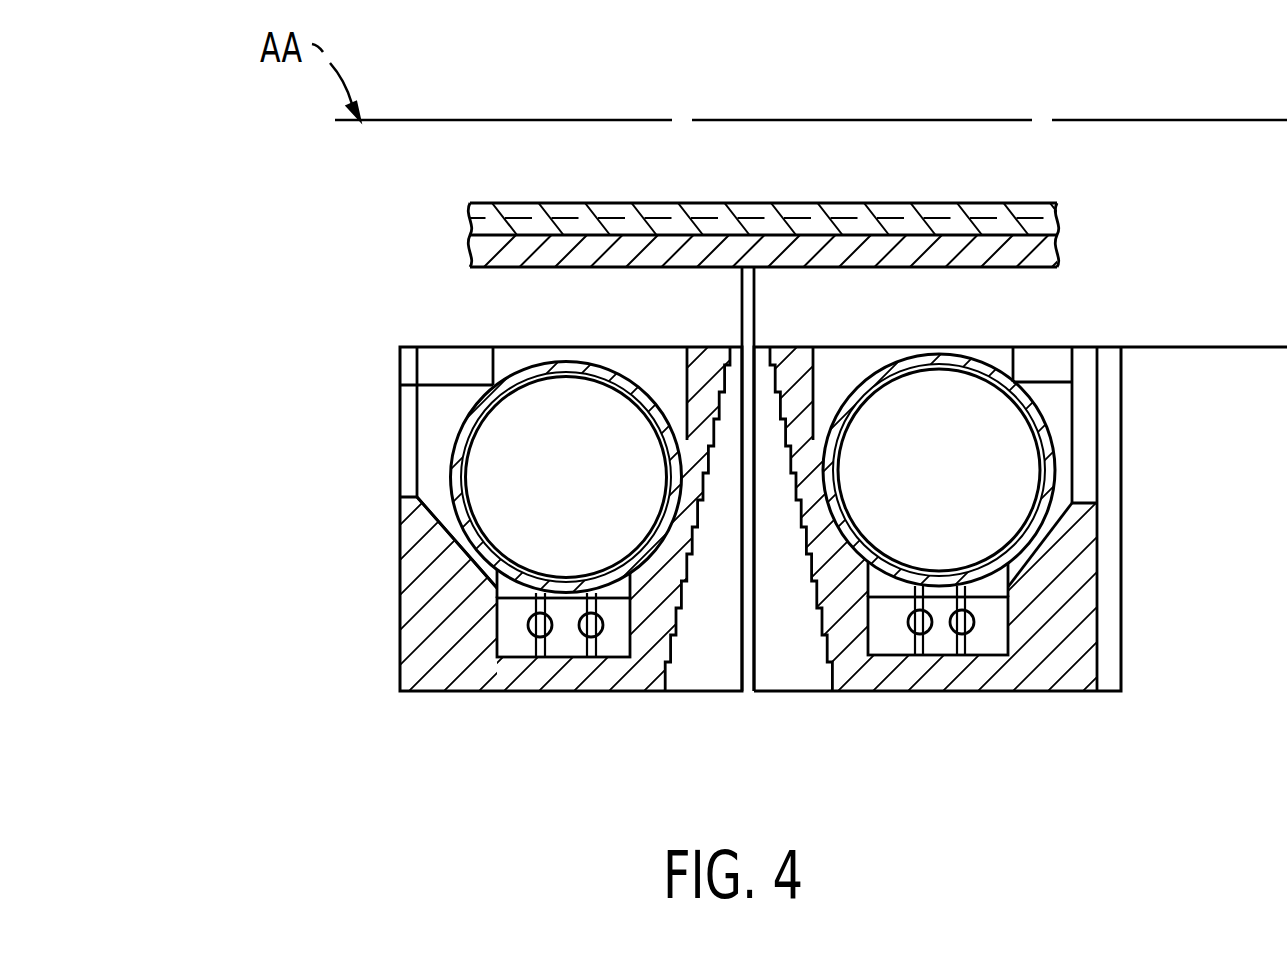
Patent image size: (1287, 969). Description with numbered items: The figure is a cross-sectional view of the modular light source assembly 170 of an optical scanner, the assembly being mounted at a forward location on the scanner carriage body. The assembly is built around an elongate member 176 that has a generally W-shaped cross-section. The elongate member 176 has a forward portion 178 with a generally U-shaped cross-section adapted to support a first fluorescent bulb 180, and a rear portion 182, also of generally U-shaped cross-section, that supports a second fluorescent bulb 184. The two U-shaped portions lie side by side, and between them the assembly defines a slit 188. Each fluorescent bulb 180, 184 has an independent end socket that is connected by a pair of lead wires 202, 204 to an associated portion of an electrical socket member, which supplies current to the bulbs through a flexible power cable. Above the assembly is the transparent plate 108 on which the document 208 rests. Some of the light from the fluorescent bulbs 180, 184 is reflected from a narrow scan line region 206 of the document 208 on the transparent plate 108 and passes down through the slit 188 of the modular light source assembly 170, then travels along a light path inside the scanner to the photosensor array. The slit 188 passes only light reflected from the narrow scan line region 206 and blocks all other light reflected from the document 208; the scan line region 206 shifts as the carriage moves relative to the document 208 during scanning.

The transparent plate 108 is at (1037, 258).
The document 208 is at (502, 200).
The modular light source assembly 170 is at (447, 336).
The scan line region 206 is at (742, 270).
The slit 188 is at (757, 346).
The elongate member 176 is at (417, 628).
The forward portion 178 is at (413, 535).
The rear portion 182 is at (1080, 607).
The first fluorescent bulb 180 is at (462, 455).
The second fluorescent bulb 184 is at (1037, 413).
The lead wire 202 is at (524, 630).
The lead wire 204 is at (578, 628).